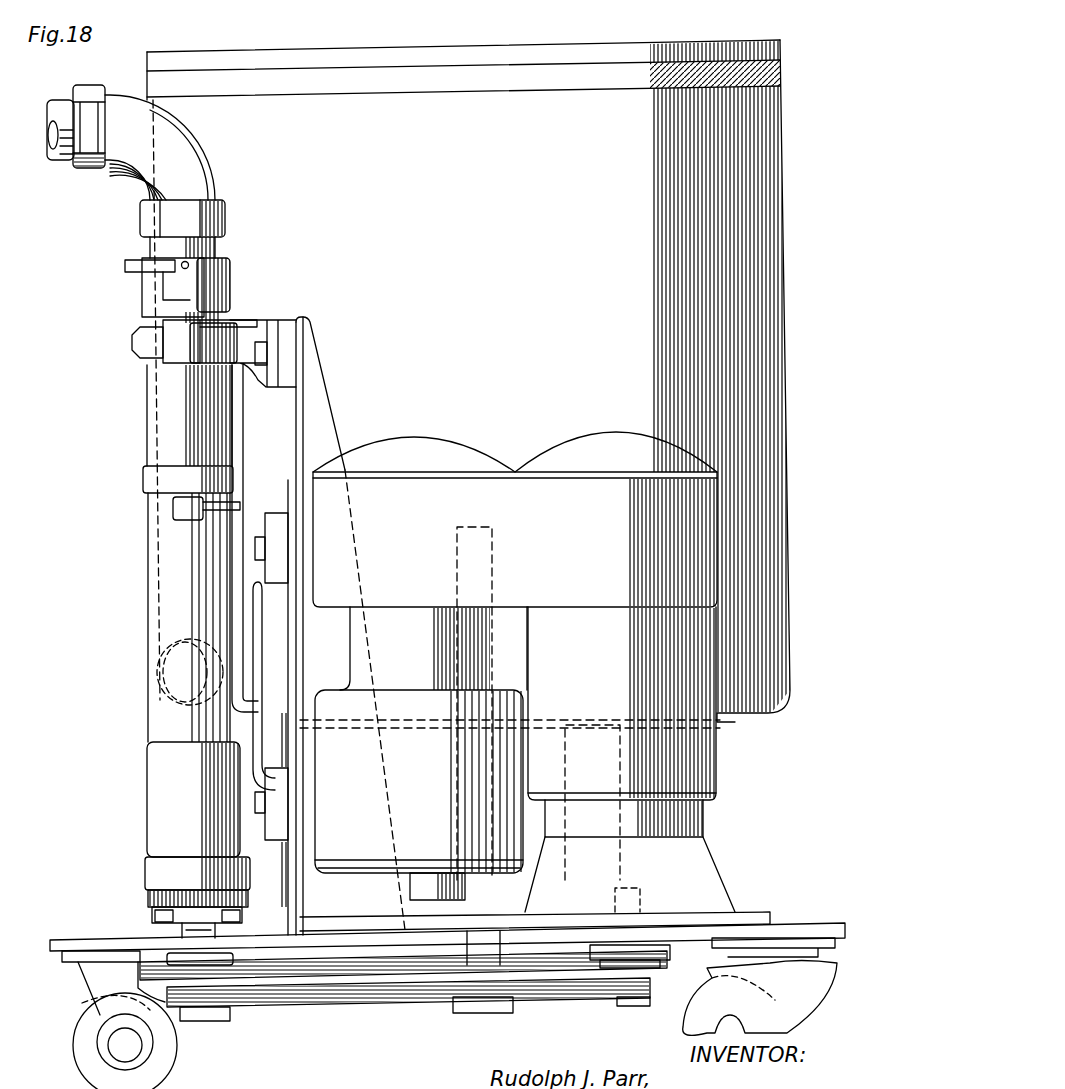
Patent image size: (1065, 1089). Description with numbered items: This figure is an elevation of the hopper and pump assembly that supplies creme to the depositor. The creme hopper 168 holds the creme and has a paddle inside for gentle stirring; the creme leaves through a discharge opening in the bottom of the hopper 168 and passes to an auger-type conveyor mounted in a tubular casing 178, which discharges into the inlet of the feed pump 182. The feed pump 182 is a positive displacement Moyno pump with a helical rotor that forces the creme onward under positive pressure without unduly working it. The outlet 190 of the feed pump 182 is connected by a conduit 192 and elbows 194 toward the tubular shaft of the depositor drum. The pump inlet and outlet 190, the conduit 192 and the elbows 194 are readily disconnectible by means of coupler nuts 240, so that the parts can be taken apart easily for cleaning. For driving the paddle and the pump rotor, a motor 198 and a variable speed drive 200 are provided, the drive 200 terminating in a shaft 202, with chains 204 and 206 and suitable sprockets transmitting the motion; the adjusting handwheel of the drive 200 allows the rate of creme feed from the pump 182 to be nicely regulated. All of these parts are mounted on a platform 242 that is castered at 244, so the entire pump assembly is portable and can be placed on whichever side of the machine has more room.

The creme hopper 168 is at (461, 48).
The coupler nut 240 is at (85, 95).
The conduit 192 is at (47, 165).
The elbow 194 is at (130, 168).
The outlet of the pump 190 is at (163, 247).
The feed pump 182 is at (139, 431).
The tubular casing 178 is at (166, 630).
The variable speed drive 200 is at (560, 540).
The motor 198 is at (368, 860).
The platform 242 is at (95, 939).
The chain 204 is at (388, 965).
The chain 206 is at (362, 1000).
The shaft 202 is at (625, 1000).
The caster 244 is at (160, 1064).